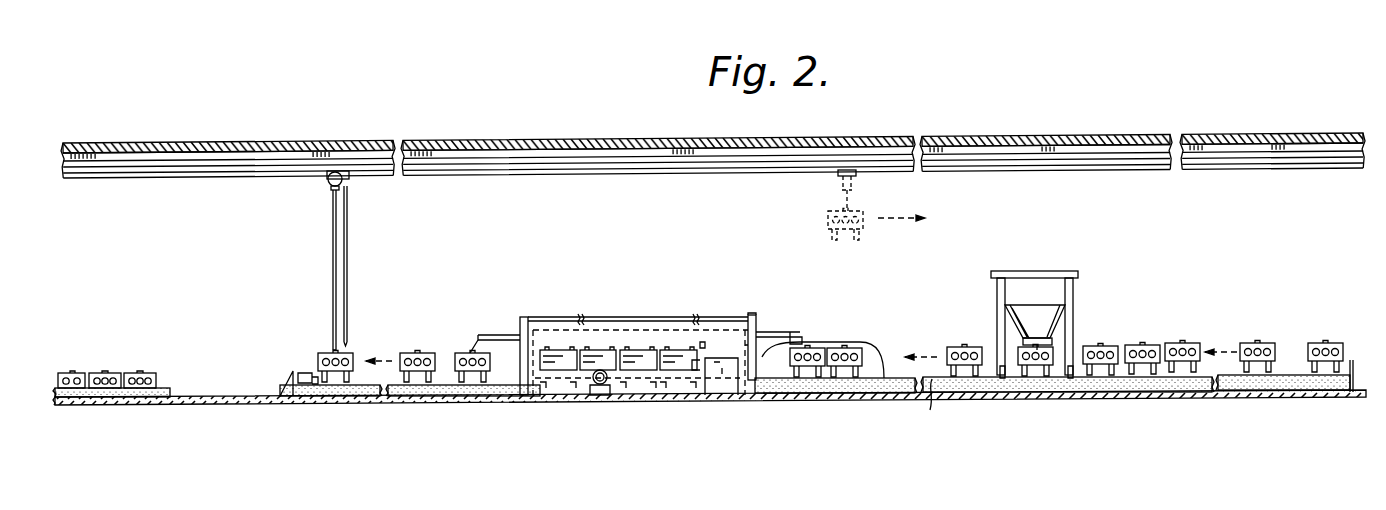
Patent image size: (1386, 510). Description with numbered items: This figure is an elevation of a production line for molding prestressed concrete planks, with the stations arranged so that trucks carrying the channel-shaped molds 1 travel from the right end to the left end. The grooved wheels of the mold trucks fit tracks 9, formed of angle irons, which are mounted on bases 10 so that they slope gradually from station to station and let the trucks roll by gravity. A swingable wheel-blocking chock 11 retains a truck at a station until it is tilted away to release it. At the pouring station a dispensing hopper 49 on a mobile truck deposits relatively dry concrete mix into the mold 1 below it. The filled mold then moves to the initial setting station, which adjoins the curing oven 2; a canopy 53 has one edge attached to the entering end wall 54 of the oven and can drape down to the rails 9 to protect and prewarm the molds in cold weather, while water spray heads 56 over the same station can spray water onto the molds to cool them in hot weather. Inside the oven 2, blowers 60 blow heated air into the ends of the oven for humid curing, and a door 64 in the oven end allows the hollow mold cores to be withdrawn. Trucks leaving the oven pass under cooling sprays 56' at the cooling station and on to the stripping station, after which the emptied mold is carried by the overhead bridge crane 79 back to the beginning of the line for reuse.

The mold 1 is at (415, 346).
The oven 2 is at (645, 323).
The tracks 9 is at (445, 385).
The bases 10 is at (470, 390).
The chock 11 is at (388, 386).
The dispensing hopper 49 is at (1040, 286).
The canopy 53 is at (836, 342).
The entering end wall 54 is at (762, 328).
The water spray heads 56 is at (779, 319).
The cooling sprays 56' is at (480, 332).
The blowers 60 is at (612, 386).
The door 64 is at (722, 386).
The bridge crane 79 is at (320, 190).